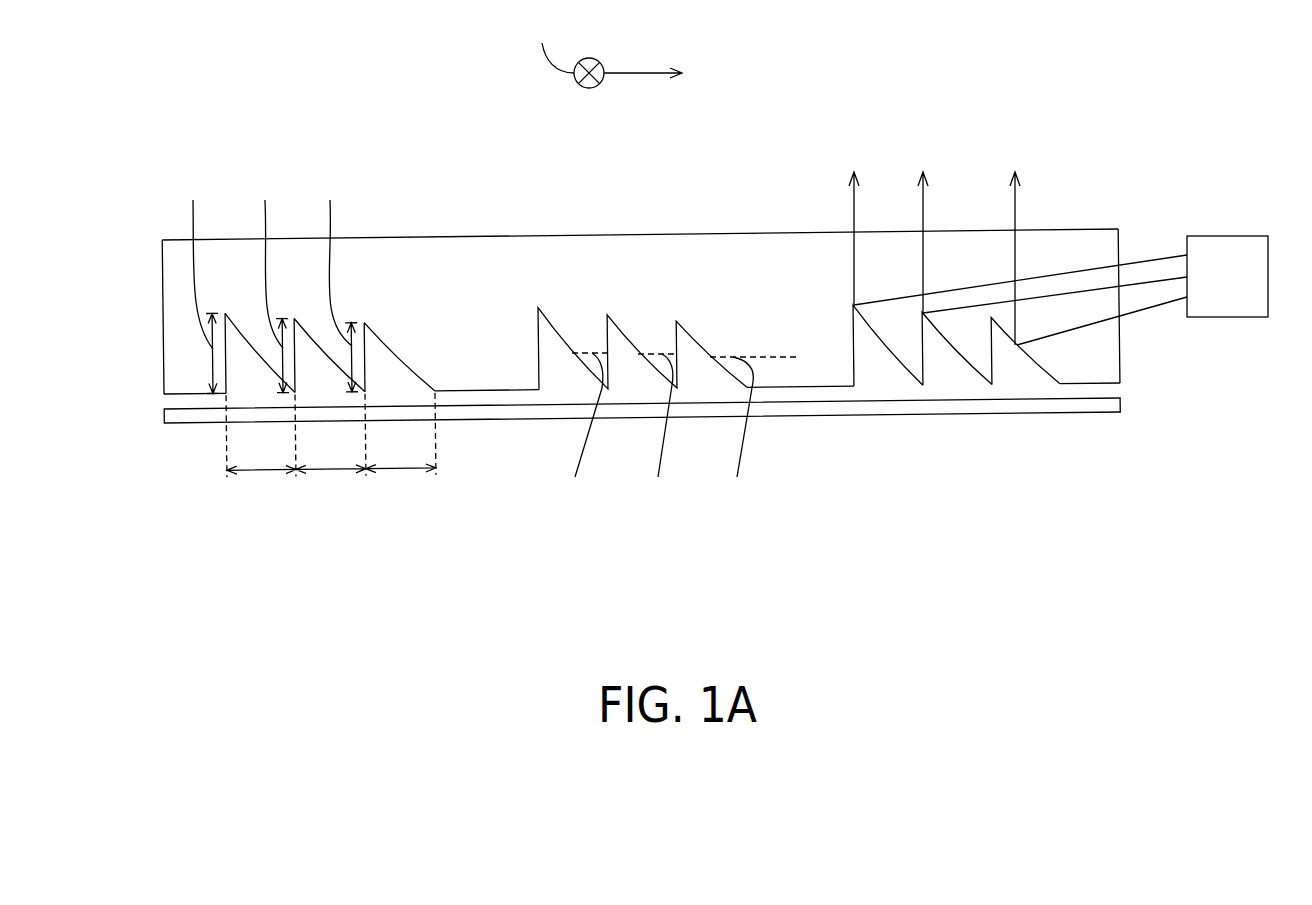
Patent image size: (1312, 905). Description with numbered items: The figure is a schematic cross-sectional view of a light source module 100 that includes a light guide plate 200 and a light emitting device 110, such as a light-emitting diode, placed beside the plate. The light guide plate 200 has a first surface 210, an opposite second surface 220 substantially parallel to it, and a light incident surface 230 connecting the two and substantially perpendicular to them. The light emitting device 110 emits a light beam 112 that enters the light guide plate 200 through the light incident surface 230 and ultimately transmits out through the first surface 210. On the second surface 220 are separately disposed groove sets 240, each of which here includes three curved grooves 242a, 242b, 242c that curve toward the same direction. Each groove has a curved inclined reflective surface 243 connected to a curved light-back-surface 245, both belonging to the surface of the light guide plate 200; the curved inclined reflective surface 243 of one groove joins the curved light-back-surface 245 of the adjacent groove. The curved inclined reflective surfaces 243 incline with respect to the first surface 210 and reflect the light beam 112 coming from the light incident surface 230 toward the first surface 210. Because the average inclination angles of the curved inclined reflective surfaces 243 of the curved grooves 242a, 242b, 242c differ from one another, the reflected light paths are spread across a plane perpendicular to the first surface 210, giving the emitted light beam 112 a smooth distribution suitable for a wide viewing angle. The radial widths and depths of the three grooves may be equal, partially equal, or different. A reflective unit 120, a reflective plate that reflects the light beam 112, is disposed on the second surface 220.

The light source module 100 is at (693, 311).
The light emitting device 110 is at (1227, 252).
The light beam 112 is at (1150, 258).
The reflective unit 120 is at (205, 423).
The light guide plate 200 is at (175, 271).
The first surface 210 is at (450, 224).
The second surface 220 is at (193, 409).
The light incident surface 230 is at (1134, 250).
The groove set 240 is at (1022, 438).
The curved groove 242a is at (1099, 417).
The curved groove 242b is at (958, 387).
The curved groove 242c is at (883, 387).
The curved inclined reflective surface 243 is at (406, 388).
The curved light-back-surface 245 is at (380, 363).